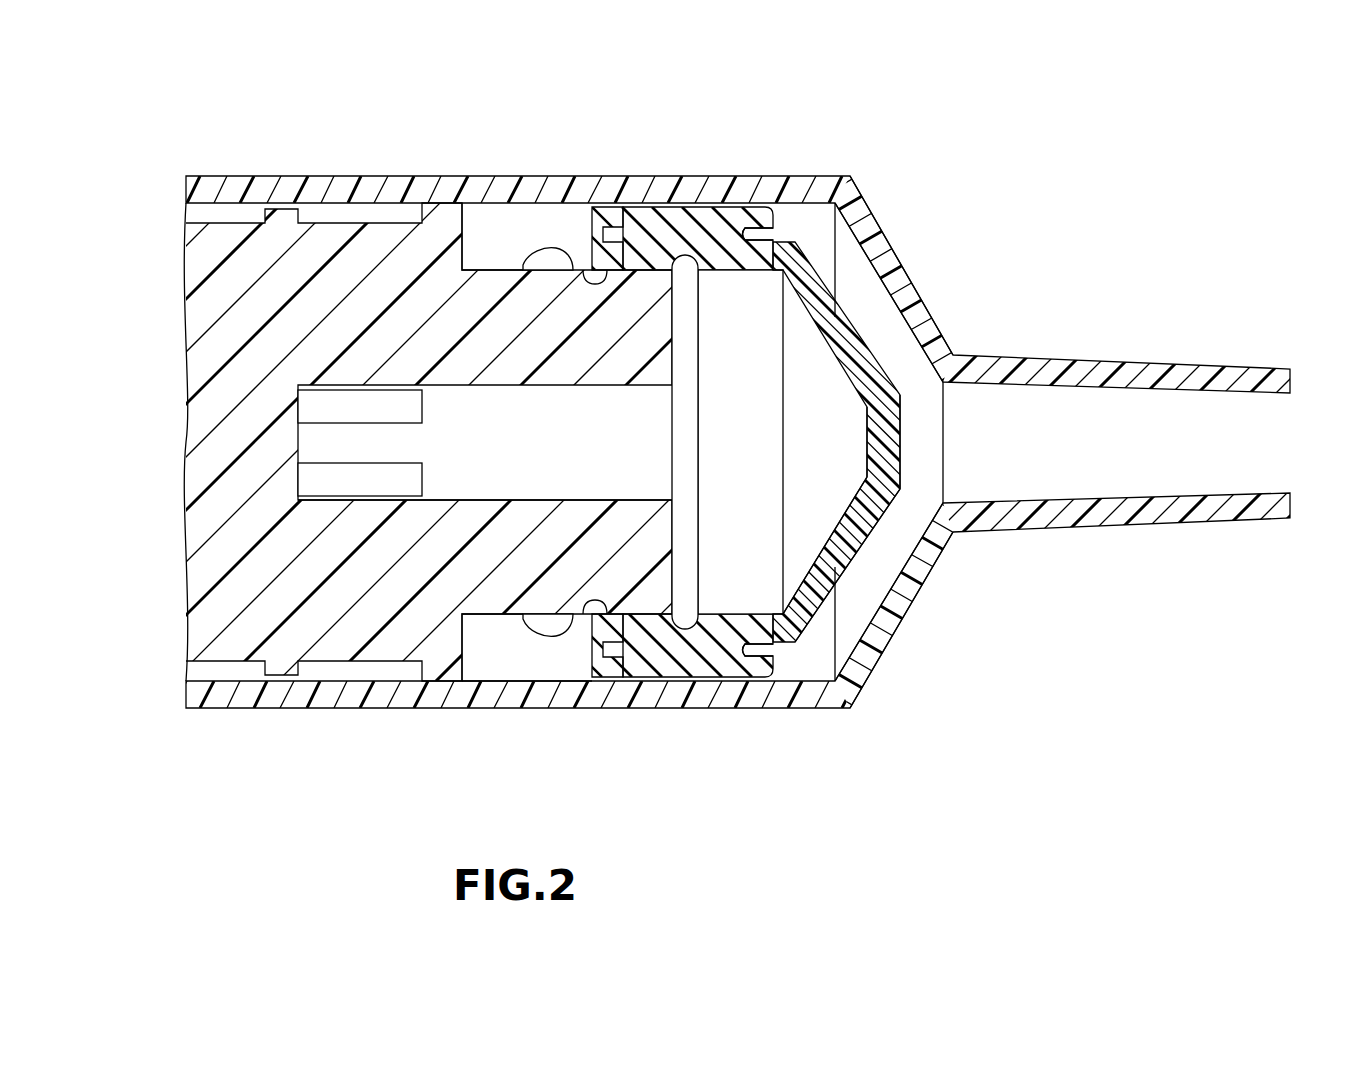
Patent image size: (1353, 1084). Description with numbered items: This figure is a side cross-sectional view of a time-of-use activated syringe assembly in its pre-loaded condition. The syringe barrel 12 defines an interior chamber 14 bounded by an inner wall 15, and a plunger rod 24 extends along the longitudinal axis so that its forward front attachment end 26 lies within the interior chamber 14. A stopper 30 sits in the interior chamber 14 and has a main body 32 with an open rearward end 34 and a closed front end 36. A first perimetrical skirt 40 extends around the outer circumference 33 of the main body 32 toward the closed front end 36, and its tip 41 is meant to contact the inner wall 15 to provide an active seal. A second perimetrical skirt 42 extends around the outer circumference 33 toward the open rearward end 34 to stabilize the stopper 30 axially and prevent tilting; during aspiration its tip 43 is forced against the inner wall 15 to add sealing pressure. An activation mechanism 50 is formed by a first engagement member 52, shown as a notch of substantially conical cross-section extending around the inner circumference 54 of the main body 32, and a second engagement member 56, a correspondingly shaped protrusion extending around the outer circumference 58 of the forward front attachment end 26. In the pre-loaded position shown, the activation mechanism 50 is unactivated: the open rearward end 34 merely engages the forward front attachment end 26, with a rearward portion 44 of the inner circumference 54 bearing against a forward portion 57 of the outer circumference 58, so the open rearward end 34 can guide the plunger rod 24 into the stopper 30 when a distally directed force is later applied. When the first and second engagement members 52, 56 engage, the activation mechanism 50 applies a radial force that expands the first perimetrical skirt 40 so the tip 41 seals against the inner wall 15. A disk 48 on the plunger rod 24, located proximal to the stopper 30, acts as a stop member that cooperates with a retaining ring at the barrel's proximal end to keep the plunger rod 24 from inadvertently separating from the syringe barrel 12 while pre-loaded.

The syringe barrel 12 is at (220, 183).
The interior chamber 14 is at (514, 653).
The inner wall 15 is at (513, 672).
The plunger rod 24 is at (200, 570).
The forward front attachment end 26 is at (463, 563).
The stopper 30 is at (838, 325).
The main body 32 is at (842, 567).
The outer circumference 33 is at (790, 615).
The open rearward end 34 is at (660, 215).
The closed front end 36 is at (882, 482).
The first perimetrical skirt 40 is at (785, 215).
The tip 41 is at (793, 645).
The second perimetrical skirt 42 is at (603, 225).
The tip 43 is at (605, 677).
The rearward portion of the inner circumference 44 is at (688, 230).
The disk 48 is at (438, 215).
The activation mechanism 50 is at (660, 734).
The first engagement member 52 is at (660, 600).
The inner circumference 54 is at (584, 278).
The second engagement member 56 is at (556, 256).
The forward portion 57 is at (700, 350).
The outer circumference 58 is at (482, 630).